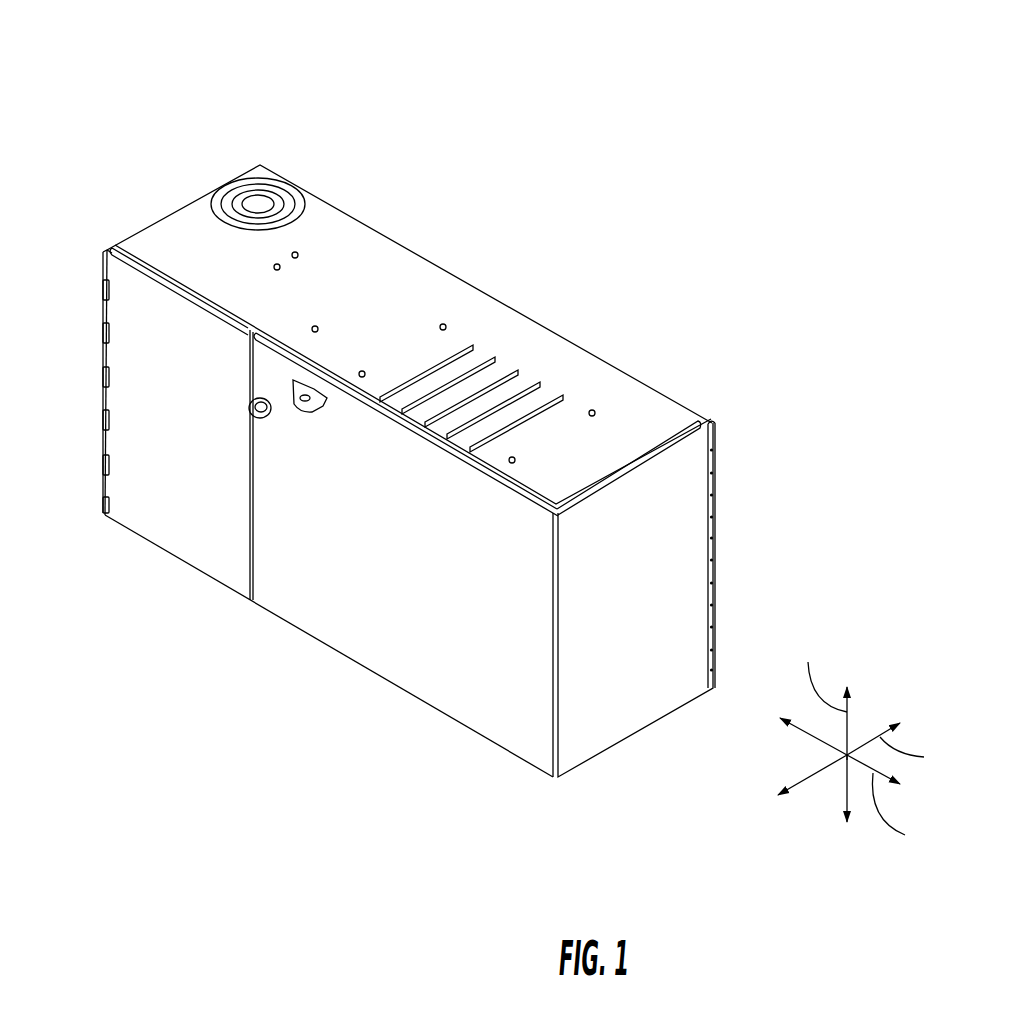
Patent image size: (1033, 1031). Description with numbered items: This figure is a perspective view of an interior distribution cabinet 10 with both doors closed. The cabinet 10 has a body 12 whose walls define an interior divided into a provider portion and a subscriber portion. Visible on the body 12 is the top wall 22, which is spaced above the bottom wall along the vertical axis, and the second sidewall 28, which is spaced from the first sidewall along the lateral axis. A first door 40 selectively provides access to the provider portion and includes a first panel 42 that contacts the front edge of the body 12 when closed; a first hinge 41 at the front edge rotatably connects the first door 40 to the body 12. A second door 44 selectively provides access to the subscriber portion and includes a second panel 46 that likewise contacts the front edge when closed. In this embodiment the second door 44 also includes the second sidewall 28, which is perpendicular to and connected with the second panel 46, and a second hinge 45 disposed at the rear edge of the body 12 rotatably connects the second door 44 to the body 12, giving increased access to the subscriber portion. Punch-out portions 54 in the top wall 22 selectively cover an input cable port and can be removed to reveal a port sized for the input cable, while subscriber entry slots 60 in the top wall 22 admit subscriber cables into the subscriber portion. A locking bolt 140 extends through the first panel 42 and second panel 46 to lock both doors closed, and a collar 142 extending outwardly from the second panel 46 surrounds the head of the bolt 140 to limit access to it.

The interior distribution cabinet 10 is at (142, 108).
The body 12 is at (150, 212).
The top wall 22 is at (595, 382).
The second sidewall 28 is at (685, 528).
The first door 40 is at (172, 517).
The first hinge 41 is at (96, 276).
The first panel 42 is at (127, 470).
The second door 44 is at (485, 712).
The second hinge 45 is at (720, 445).
The second panel 46 is at (425, 675).
The punch-out portions 54 is at (258, 200).
The subscriber entry slots 60 is at (470, 343).
The locking bolt 140 is at (251, 414).
The collar 142 is at (271, 424).